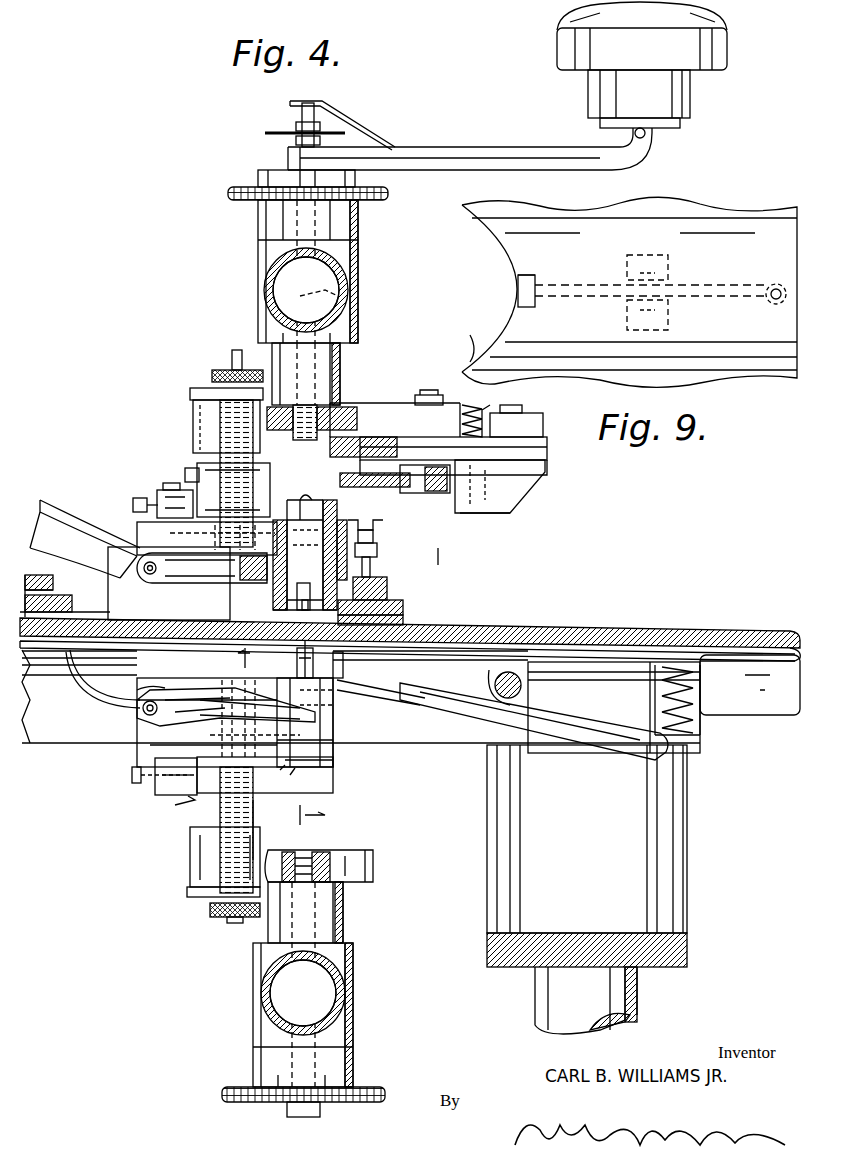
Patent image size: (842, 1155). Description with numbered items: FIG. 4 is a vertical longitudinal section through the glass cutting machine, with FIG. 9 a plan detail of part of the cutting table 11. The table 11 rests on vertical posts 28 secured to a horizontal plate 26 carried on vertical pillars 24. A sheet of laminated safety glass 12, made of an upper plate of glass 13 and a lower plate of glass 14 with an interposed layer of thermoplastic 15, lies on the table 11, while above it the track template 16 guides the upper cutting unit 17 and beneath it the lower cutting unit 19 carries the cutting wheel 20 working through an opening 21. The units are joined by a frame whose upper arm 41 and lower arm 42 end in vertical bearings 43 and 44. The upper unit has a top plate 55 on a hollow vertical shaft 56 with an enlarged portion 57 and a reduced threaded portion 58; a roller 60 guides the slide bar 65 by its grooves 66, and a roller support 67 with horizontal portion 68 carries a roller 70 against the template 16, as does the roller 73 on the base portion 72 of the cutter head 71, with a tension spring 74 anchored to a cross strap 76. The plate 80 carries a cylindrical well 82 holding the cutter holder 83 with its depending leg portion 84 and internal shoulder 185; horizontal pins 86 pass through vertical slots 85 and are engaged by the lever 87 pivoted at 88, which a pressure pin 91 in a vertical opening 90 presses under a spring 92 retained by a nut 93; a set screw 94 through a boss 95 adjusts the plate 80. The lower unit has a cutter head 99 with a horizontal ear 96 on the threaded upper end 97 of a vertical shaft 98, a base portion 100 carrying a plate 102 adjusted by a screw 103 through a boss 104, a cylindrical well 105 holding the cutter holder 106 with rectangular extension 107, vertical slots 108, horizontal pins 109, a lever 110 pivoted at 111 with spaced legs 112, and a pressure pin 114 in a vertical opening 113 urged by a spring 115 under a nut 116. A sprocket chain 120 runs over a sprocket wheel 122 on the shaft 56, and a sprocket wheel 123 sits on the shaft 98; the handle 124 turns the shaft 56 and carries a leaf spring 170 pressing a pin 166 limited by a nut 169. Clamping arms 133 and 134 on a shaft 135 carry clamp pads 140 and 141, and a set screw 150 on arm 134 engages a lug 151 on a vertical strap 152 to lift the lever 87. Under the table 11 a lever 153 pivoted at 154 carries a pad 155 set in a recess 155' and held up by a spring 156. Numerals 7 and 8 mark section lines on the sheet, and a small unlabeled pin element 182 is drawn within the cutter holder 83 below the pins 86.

In FIG. 4, the base 7 is at (425, 550).
In FIG. 4, the section line 8 is at (278, 736).
In FIG. 4, the cutting table 11 is at (42, 732).
In FIG. 9, the cutting table 11 is at (745, 205).
In FIG. 4, the sheet of laminated safety glass 12 is at (545, 625).
In FIG. 4, the upper plate of glass 13 is at (735, 645).
In FIG. 4, the lower plate of glass 14 is at (712, 662).
In FIG. 4, the layer of thermoplastic 15 is at (773, 645).
In FIG. 4, the track template 16 is at (402, 485).
In FIG. 4, the upper cutting unit 17 is at (372, 391).
In FIG. 4, the lower cutting unit 19 is at (185, 805).
In FIG. 4, the cutting wheel 20 is at (305, 655).
In FIG. 4, the opening 21 is at (130, 680).
In FIG. 9, the opening 21 is at (480, 340).
In FIG. 4, the vertical pillars 24 is at (632, 990).
In FIG. 4, the horizontal plate 26 is at (585, 943).
In FIG. 4, the vertical posts 28 is at (660, 790).
In FIG. 4, the upper arm 41 is at (268, 272).
In FIG. 4, the lower arm 42 is at (348, 968).
In FIG. 4, the vertical bearing 43 is at (348, 262).
In FIG. 4, the vertical bearing 44 is at (352, 1022).
In FIG. 4, the top plate 55 is at (340, 405).
In FIG. 4, the vertical shaft 56 is at (292, 282).
In FIG. 4, the enlarged portion 57 is at (340, 352).
In FIG. 4, the reduced threaded portion 58 is at (300, 405).
In FIG. 4, the roller 60 is at (430, 403).
In FIG. 4, the slide bar 65 is at (350, 430).
In FIG. 4, the grooves 66 is at (538, 450).
In FIG. 4, the roller support 67 is at (532, 490).
In FIG. 4, the horizontal portion 68 is at (490, 513).
In FIG. 4, the roller 70 is at (448, 482).
In FIG. 4, the cutter head 71 is at (210, 436).
In FIG. 4, the base portion 72 is at (190, 478).
In FIG. 4, the roller 73 is at (380, 440).
In FIG. 4, the tension spring 74 is at (472, 410).
In FIG. 4, the cross strap 76 is at (540, 422).
In FIG. 4, the horizontal plate 80 is at (145, 530).
In FIG. 4, the cylindrical well 82 is at (378, 548).
In FIG. 4, the cutter holder 83 is at (290, 590).
In FIG. 4, the depending leg portion 84 is at (272, 606).
In FIG. 4, the vertical slots 85 is at (347, 559).
In FIG. 4, the horizontal pins 86 is at (245, 572).
In FIG. 4, the lever 87 is at (202, 575).
In FIG. 4, the pivot 88 is at (146, 574).
In FIG. 4, the vertical opening 90 is at (192, 402).
In FIG. 4, the pressure pin 91 is at (222, 536).
In FIG. 4, the spring 92 is at (215, 478).
In FIG. 4, the nut 93 is at (222, 370).
In FIG. 4, the set screw 94 is at (140, 498).
In FIG. 4, the boss 95 is at (167, 490).
In FIG. 4, the horizontal ear 96 is at (365, 862).
In FIG. 4, the threaded upper end 97 is at (330, 850).
In FIG. 4, the vertical shaft 98 is at (290, 998).
In FIG. 4, the cutter head 99 is at (200, 858).
In FIG. 4, the base portion 100 is at (333, 775).
In FIG. 4, the plate 102 is at (148, 740).
In FIG. 4, the screw 103 is at (136, 783).
In FIG. 4, the boss 104 is at (164, 795).
In FIG. 4, the cylindrical well 105 is at (335, 730).
In FIG. 4, the cutter holder 106 is at (336, 710).
In FIG. 4, the rectangular extension 107 is at (297, 667).
In FIG. 4, the vertical slots 108 is at (337, 752).
In FIG. 4, the horizontal pins 109 is at (240, 690).
In FIG. 4, the lever 110 is at (192, 694).
In FIG. 4, the pivot 111 is at (150, 686).
In FIG. 4, the spaced legs 112 is at (255, 720).
In FIG. 4, the vertical opening 113 is at (255, 833).
In FIG. 4, the pressure pin 114 is at (246, 707).
In FIG. 4, the spring 115 is at (220, 820).
In FIG. 4, the nut 116 is at (210, 908).
In FIG. 4, the sprocket chain 120 is at (365, 201).
In FIG. 4, the sprocket wheel 122 is at (228, 193).
In FIG. 4, the sprocket wheel 123 is at (235, 1104).
In FIG. 4, the handle 124 is at (547, 168).
In FIG. 4, the clamping arm 133 is at (55, 575).
In FIG. 4, the clamping arm 134 is at (400, 592).
In FIG. 4, the shaft 135 is at (377, 691).
In FIG. 4, the clamp pad 140 is at (55, 588).
In FIG. 4, the clamp pad 141 is at (403, 613).
In FIG. 4, the set screw 150 is at (385, 540).
In FIG. 4, the lug 151 is at (388, 530).
In FIG. 4, the vertical strap 152 is at (373, 511).
In FIG. 4, the lever 153 is at (455, 700).
In FIG. 9, the lever 153 is at (603, 265).
In FIG. 4, the pivot 154 is at (505, 702).
In FIG. 9, the pivot 154 is at (652, 255).
In FIG. 9, the pad 155 is at (503, 285).
In FIG. 9, the recess 155' is at (537, 255).
In FIG. 4, the spring 156 is at (700, 712).
In FIG. 9, the spring 156 is at (766, 284).
In FIG. 4, the pin 166 is at (332, 296).
In FIG. 4, the nut 169 is at (302, 133).
In FIG. 4, the leaf spring 170 is at (346, 121).
In FIG. 4, the pin 182 is at (302, 605).
In FIG. 4, the internal shoulder 185 is at (314, 612).